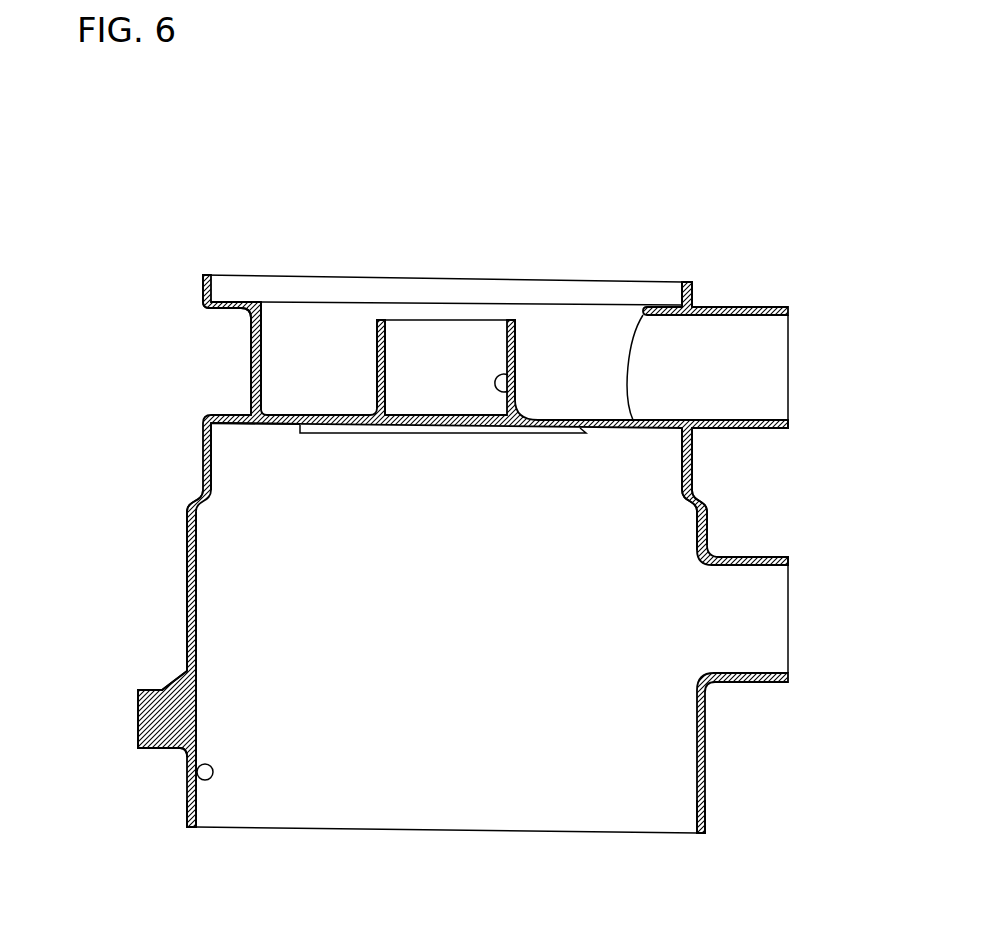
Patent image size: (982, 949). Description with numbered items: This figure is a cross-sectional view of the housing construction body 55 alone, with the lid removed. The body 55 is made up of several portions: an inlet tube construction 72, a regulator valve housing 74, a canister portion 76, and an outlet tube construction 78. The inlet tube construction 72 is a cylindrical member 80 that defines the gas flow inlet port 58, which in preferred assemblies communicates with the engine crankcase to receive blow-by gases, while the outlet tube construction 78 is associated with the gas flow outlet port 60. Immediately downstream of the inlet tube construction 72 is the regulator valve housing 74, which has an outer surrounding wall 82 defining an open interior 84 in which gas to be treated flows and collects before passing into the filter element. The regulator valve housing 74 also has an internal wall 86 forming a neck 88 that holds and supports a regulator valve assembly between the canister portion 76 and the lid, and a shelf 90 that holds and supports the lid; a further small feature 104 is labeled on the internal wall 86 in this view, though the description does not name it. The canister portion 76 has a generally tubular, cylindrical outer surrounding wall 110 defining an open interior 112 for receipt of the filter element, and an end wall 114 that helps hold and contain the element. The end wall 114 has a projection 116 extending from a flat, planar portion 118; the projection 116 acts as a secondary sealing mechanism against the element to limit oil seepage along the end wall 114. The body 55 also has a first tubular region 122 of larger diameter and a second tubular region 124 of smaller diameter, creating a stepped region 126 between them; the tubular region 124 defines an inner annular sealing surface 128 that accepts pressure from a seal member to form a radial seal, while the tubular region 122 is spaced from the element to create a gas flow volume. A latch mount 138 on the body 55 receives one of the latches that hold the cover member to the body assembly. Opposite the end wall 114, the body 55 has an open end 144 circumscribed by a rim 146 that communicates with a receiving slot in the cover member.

The body 55 is at (152, 258).
The gas flow inlet port 58 is at (762, 315).
The gas flow outlet port 60 is at (760, 675).
The inlet tube construction 72 is at (732, 307).
The regulator valve housing 74 is at (252, 335).
The canister portion 76 is at (187, 538).
The outlet tube construction 78 is at (747, 558).
The cylindrical member 80 is at (742, 430).
The outer surrounding wall 82 is at (252, 367).
The open interior 84 is at (262, 364).
The internal wall 86 is at (518, 342).
The neck 88 is at (377, 358).
The shelf 90 is at (225, 303).
The seal ring 104 is at (518, 390).
The outer surrounding wall 110 is at (187, 582).
The open interior 112 is at (200, 775).
The end wall 114 is at (643, 428).
The projection 116 is at (300, 428).
The flat, planar portion 118 is at (277, 424).
The first tubular region 122 is at (197, 608).
The second tubular region 124 is at (212, 458).
The stepped region 126 is at (193, 500).
The annular sealing surface 128 is at (682, 468).
The latch mount 138 is at (143, 690).
The open end 144 is at (196, 829).
The rim 146 is at (703, 834).